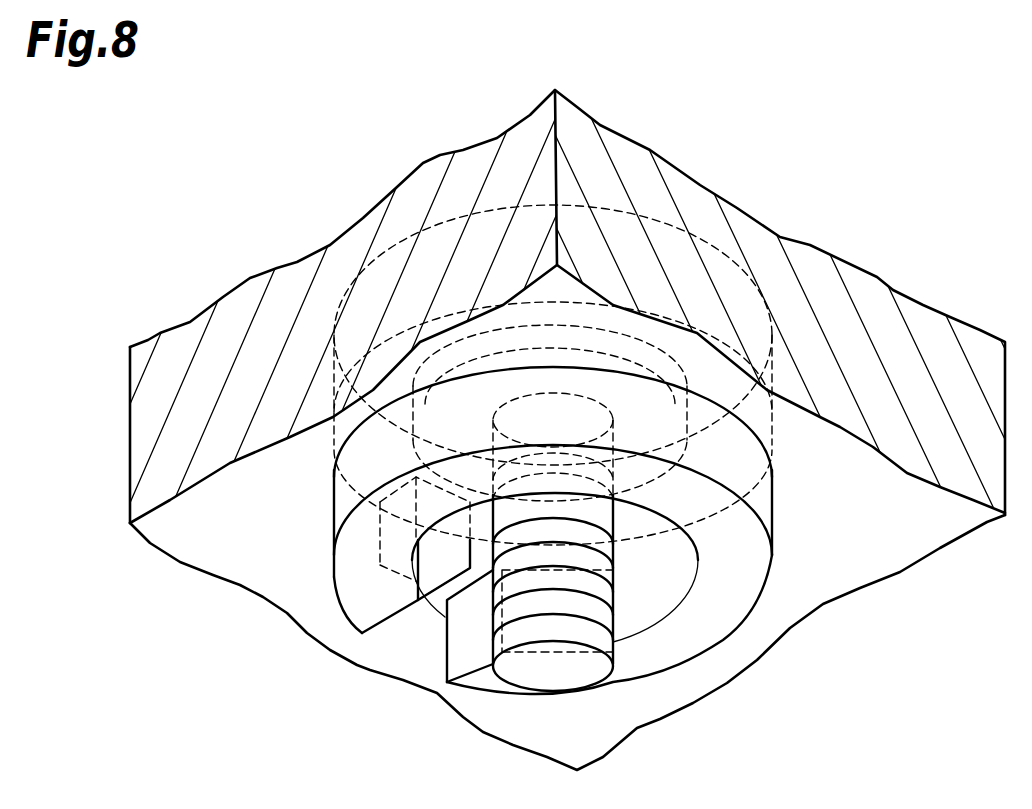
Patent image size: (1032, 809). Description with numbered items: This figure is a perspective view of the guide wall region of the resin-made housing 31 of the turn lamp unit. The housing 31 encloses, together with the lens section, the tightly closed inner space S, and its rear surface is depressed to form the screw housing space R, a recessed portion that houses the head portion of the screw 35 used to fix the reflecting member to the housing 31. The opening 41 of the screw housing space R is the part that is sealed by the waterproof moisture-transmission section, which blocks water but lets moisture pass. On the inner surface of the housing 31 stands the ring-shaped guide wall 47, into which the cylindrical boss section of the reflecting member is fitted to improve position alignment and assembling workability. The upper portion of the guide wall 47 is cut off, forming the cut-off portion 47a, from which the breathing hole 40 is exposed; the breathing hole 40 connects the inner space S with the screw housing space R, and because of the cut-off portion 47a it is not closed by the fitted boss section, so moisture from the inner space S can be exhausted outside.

The housing 31 is at (862, 284).
The inner space S is at (887, 658).
The opening 41 is at (700, 226).
The screw housing space R is at (635, 238).
The guide wall 47 is at (680, 643).
The cut-off portion 47a is at (393, 647).
The breathing hole 40 is at (440, 573).
The screw 35 is at (598, 586).